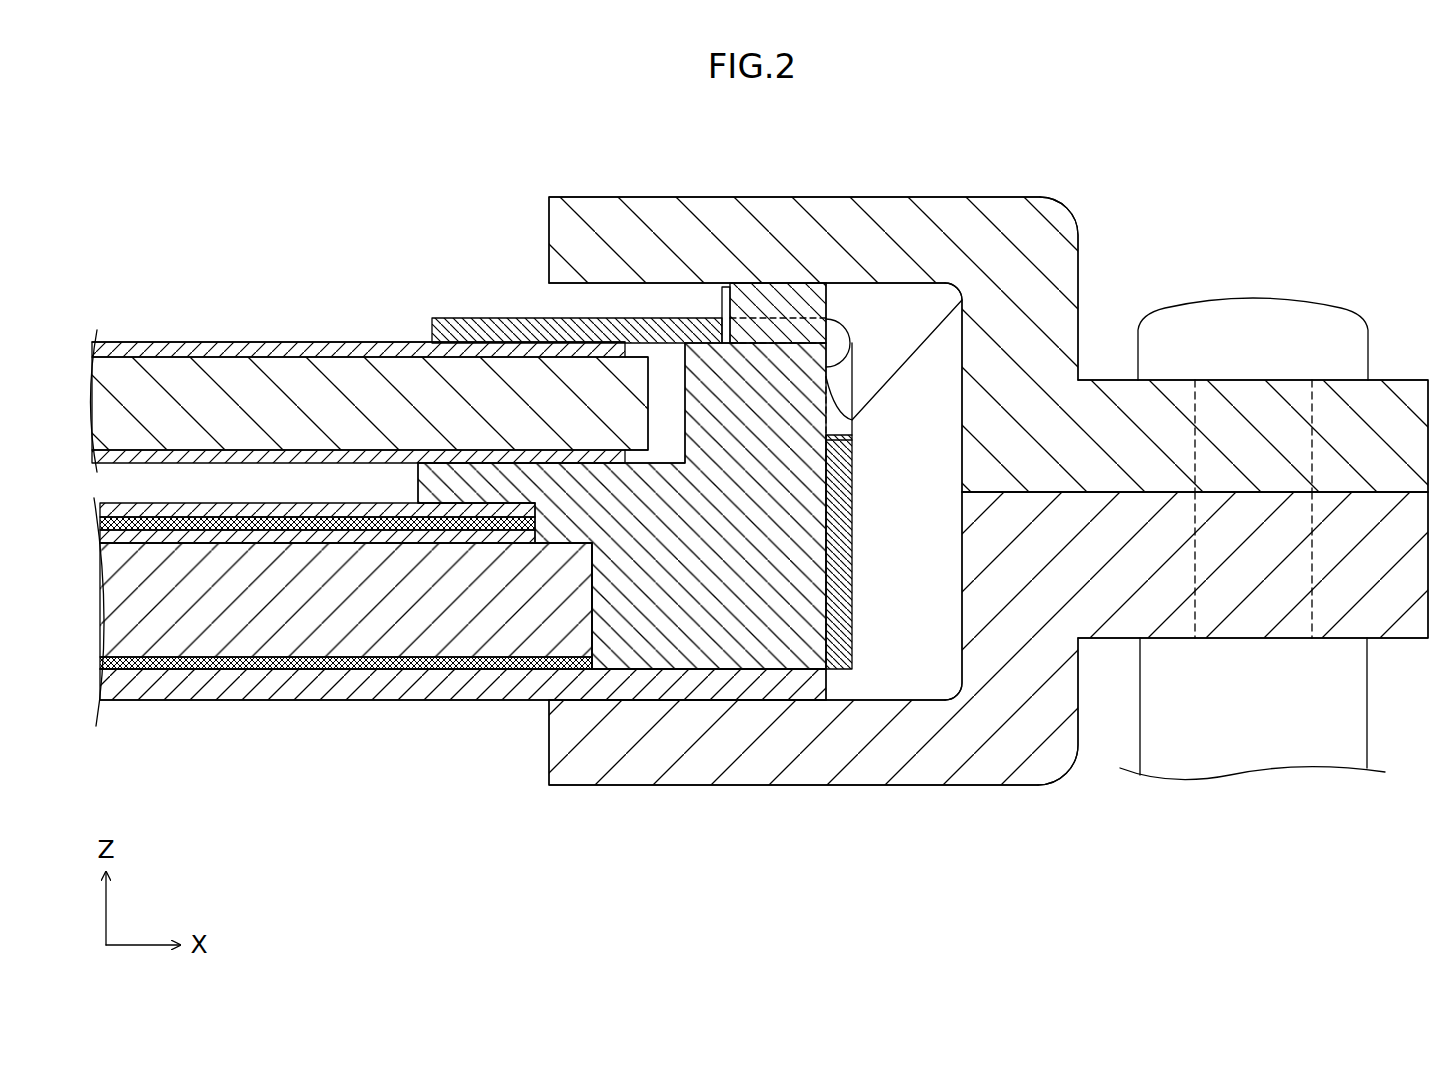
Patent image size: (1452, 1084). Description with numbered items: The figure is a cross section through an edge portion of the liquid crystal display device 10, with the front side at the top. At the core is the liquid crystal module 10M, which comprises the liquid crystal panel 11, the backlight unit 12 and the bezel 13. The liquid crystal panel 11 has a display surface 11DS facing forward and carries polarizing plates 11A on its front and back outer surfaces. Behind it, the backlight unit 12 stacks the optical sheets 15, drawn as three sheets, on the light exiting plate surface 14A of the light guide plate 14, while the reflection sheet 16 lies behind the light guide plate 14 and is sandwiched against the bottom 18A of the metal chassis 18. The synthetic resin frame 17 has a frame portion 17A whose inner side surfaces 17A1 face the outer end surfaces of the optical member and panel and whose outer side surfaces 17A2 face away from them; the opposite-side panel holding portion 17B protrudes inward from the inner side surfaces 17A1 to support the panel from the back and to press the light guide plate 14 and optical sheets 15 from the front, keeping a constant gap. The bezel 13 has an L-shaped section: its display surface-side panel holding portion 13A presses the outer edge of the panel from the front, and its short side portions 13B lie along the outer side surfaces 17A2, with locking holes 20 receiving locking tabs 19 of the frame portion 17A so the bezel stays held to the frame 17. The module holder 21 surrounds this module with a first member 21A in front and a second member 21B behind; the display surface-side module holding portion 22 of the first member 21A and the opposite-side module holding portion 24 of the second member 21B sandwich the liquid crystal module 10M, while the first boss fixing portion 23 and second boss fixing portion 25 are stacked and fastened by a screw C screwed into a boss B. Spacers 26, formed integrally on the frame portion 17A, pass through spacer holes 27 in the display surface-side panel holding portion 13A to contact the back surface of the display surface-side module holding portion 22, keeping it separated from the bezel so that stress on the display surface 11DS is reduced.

The liquid crystal display device 10 is at (193, 195).
The liquid crystal panel 11 is at (370, 369).
The polarizing plates 11A is at (158, 455).
The display surface 11DS is at (250, 350).
The optical sheets 15 is at (372, 536).
The frame 17 is at (645, 499).
The frame portion 17A is at (712, 620).
The inner side surfaces 17A1 is at (577, 600).
The outer side surfaces 17A2 is at (852, 607).
The opposite-side panel holding portion 17B is at (458, 480).
The bezel 13 is at (698, 490).
The display surface-side panel holding portion 13A is at (486, 330).
The short side portions 13B is at (850, 548).
The display surface-side module holding portion 22 is at (615, 230).
The opposite-side module holding portion 24 is at (637, 762).
The spacers 26 is at (776, 300).
The spacer holes 27 is at (738, 300).
The locking tabs 19 is at (851, 425).
The locking holes 20 is at (958, 300).
The module holder 21 is at (1207, 499).
The first member 21A is at (1395, 375).
The second member 21B is at (1393, 642).
The first boss fixing portion 23 is at (1245, 405).
The second boss fixing portion 25 is at (1247, 617).
The screw C is at (1270, 298).
The boss B is at (1282, 737).
The light guide plate 14 is at (343, 662).
The light exiting plate surface 14A is at (143, 548).
The reflection sheet 16 is at (233, 665).
The chassis 18 is at (460, 645).
The bottom 18A is at (293, 695).
The liquid crystal module 10M is at (195, 702).
The backlight unit 12 is at (408, 742).